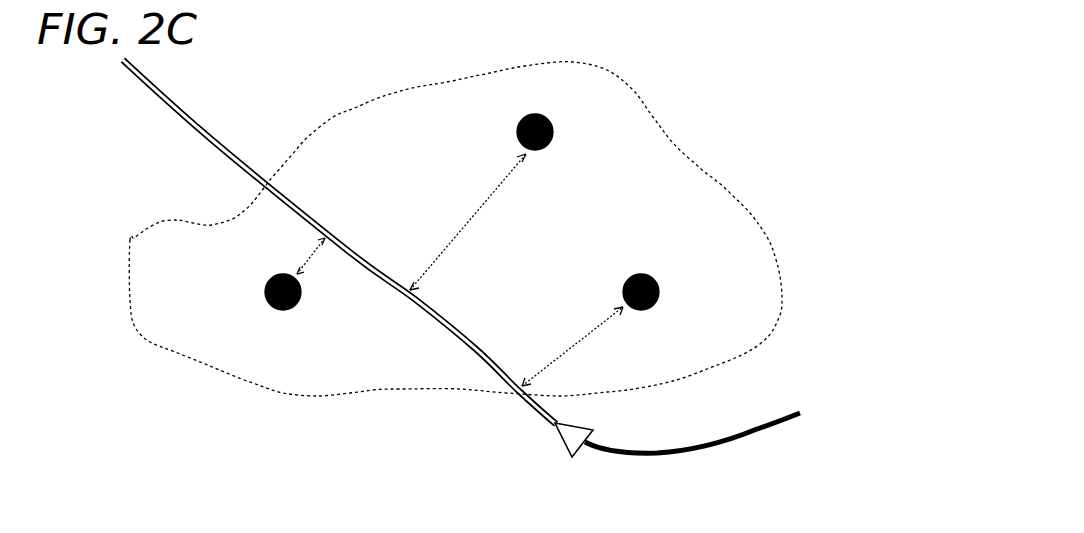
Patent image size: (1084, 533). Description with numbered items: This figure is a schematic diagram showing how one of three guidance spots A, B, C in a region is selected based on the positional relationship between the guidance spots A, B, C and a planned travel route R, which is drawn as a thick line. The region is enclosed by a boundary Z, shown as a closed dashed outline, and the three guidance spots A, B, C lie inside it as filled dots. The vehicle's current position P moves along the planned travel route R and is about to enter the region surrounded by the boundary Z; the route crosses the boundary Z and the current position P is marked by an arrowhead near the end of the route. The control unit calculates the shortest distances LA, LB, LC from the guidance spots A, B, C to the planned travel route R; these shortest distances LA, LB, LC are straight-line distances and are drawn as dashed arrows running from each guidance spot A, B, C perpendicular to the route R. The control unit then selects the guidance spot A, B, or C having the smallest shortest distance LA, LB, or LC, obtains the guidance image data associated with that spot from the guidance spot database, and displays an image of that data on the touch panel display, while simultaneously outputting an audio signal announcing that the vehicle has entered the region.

The boundary Z is at (782, 305).
The planned travel route R is at (448, 333).
The vehicle's current position P is at (585, 424).
The guidance spot A is at (283, 307).
The guidance spot B is at (535, 119).
The guidance spot C is at (641, 308).
The shortest distance LA is at (297, 253).
The shortest distance LB is at (468, 222).
The shortest distance LC is at (572, 346).